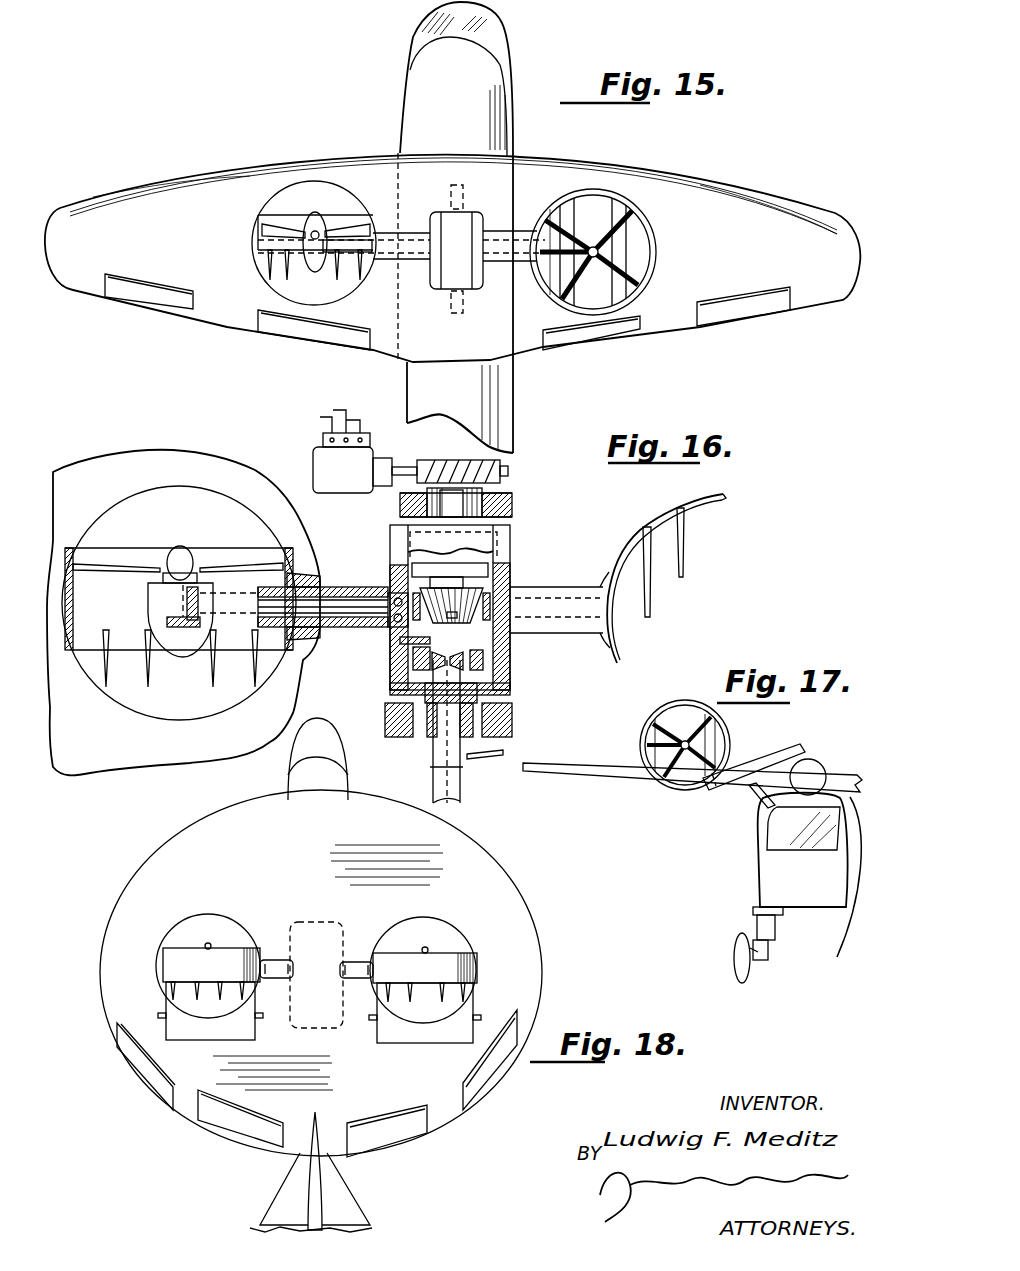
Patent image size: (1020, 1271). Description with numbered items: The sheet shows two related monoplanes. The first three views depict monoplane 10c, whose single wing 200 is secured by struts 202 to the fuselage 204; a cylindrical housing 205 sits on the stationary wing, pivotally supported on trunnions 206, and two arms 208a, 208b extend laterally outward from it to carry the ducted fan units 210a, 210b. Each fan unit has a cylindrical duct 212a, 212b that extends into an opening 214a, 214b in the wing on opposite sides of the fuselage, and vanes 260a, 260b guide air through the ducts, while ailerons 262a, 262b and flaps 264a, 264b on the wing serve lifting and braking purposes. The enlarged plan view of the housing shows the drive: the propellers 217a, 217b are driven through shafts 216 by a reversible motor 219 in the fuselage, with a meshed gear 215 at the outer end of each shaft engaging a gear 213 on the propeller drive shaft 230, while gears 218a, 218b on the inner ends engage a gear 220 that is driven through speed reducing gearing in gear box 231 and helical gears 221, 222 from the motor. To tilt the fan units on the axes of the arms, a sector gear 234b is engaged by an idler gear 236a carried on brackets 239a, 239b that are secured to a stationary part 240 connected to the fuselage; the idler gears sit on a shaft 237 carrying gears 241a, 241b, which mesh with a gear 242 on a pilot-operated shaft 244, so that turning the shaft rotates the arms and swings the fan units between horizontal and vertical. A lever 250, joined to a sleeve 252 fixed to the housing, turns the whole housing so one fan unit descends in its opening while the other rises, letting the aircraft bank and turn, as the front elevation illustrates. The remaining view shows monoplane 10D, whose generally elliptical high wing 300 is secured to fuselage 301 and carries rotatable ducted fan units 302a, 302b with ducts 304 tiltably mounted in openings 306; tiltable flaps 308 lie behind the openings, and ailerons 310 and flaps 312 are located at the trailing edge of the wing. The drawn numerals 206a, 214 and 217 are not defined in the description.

In FIG. 15, the monoplane 10c is at (115, 172).
In FIG. 16, the monoplane 10c is at (226, 440).
In FIG. 17, the monoplane 10c is at (750, 884).
In FIG. 18, the monoplane 10D is at (593, 890).
In FIG. 15, the single wing 200 is at (533, 187).
In FIG. 17, the single wing 200 is at (608, 767).
In FIG. 17, the struts 202 is at (755, 807).
In FIG. 15, the fuselage 204 is at (477, 77).
In FIG. 17, the fuselage 204 is at (772, 863).
In FIG. 15, the cylindrical housing 205 is at (467, 227).
In FIG. 16, the cylindrical housing 205 is at (510, 543).
In FIG. 17, the cylindrical housing 205 is at (853, 742).
In FIG. 15, the trunnions 206 is at (460, 190).
In FIG. 17, the support bar 206a is at (797, 737).
In FIG. 15, the arm 208a is at (412, 253).
In FIG. 16, the arm 208a is at (307, 633).
In FIG. 15, the arm 208b is at (437, 307).
In FIG. 16, the arm 208b is at (590, 634).
In FIG. 17, the arm 208b is at (837, 886).
In FIG. 15, the ducted fan unit 210a is at (298, 191).
In FIG. 15, the ducted fan unit 210b is at (596, 211).
In FIG. 15, the cylindrical duct 212a is at (260, 262).
In FIG. 15, the cylindrical duct 212b is at (633, 310).
In FIG. 16, the gear 213 is at (173, 567).
In FIG. 18, the fan 214 is at (208, 929).
In FIG. 15, the opening 214a is at (340, 195).
In FIG. 15, the opening 214b is at (657, 240).
In FIG. 16, the meshed gear 215 is at (190, 607).
In FIG. 16, the shaft 216 is at (353, 603).
In FIG. 15, the guide fins 217 is at (260, 262).
In FIG. 16, the propeller 217a is at (127, 510).
In FIG. 17, the propeller 217a is at (677, 780).
In FIG. 15, the propeller 217b is at (587, 303).
In FIG. 16, the gear 218a is at (397, 630).
In FIG. 16, the gear 218b is at (487, 597).
In FIG. 16, the reversible motor 219 is at (313, 467).
In FIG. 16, the gear 220 is at (493, 640).
In FIG. 16, the helical gear 221 is at (447, 460).
In FIG. 16, the helical gear 222 is at (477, 467).
In FIG. 16, the propeller drive shaft 230 is at (177, 587).
In FIG. 16, the gear box 231 is at (477, 560).
In FIG. 16, the sector gear 234b is at (487, 684).
In FIG. 16, the idler gear 236a is at (427, 667).
In FIG. 16, the shaft 237 is at (487, 660).
In FIG. 16, the bracket 239a is at (413, 718).
In FIG. 16, the bracket 239b is at (493, 702).
In FIG. 16, the stationary part 240 is at (512, 715).
In FIG. 16, the gear 241a is at (420, 735).
In FIG. 16, the gear 241b is at (461, 771).
In FIG. 16, the gear 242 is at (440, 670).
In FIG. 16, the shaft 244 is at (455, 792).
In FIG. 16, the lever 250 is at (503, 752).
In FIG. 16, the sleeve 252 is at (468, 756).
In FIG. 15, the vane 260a is at (273, 247).
In FIG. 16, the vane 260a is at (160, 687).
In FIG. 15, the vane 260b is at (680, 227).
In FIG. 15, the aileron 262a is at (167, 300).
In FIG. 15, the aileron 262b is at (793, 333).
In FIG. 15, the flap 264a is at (327, 330).
In FIG. 15, the flap 264b is at (560, 337).
In FIG. 18, the elliptical high wing 300 is at (517, 977).
In FIG. 18, the fuselage 301 is at (305, 780).
In FIG. 18, the rotatable ducted fan unit 302a is at (170, 925).
In FIG. 18, the rotatable ducted fan unit 302b is at (442, 935).
In FIG. 18, the duct 304 is at (180, 967).
In FIG. 18, the opening 306 is at (183, 1005).
In FIG. 18, the tiltable flap 308 is at (207, 1035).
In FIG. 18, the aileron 310 is at (490, 1080).
In FIG. 18, the flap 312 is at (380, 1137).